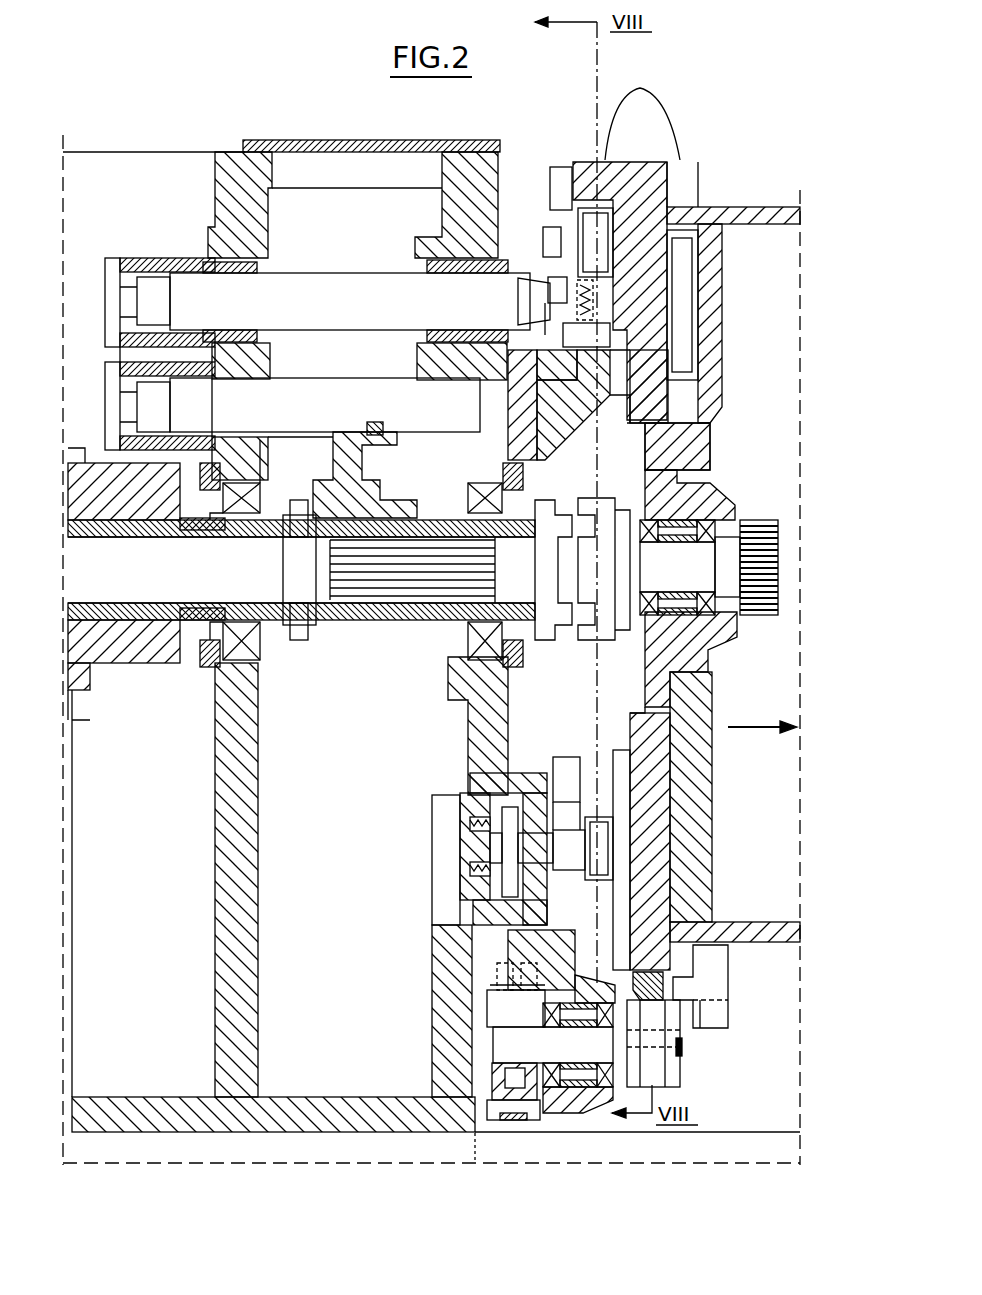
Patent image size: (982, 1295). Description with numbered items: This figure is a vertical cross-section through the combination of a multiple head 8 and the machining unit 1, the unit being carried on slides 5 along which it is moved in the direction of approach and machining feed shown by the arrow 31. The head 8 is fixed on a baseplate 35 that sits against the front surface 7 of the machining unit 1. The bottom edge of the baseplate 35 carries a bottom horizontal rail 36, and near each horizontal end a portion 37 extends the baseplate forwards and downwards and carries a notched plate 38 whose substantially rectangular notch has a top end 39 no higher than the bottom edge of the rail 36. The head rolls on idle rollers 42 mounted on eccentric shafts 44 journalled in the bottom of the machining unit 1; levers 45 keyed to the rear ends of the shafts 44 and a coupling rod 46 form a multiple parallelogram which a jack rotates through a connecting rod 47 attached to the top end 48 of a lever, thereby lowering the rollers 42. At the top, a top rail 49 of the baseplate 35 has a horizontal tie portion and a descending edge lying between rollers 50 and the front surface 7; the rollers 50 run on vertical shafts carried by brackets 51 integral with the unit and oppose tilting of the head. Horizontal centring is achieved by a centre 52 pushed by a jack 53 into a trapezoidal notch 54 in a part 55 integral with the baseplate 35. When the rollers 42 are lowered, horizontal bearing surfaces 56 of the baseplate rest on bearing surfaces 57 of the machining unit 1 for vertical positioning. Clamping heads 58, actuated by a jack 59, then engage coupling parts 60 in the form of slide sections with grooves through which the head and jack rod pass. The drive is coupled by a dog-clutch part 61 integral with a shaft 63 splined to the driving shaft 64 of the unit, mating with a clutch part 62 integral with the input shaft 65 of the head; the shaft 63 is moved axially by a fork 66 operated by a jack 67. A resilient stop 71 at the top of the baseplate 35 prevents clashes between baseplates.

The machining unit 1 is at (470, 185).
The slides 5 is at (766, 1142).
The front surface 7 is at (510, 718).
The head 8 is at (760, 212).
The arrow 31 is at (762, 715).
The baseplate 35 is at (655, 848).
The bottom horizontal rail 36 is at (652, 980).
The portion 37 is at (712, 977).
The notched plate 38 is at (710, 1020).
The top end 39 is at (715, 1003).
The rollers 42 is at (656, 1066).
The shafts 44 is at (578, 1050).
The levers 45 is at (500, 1082).
The coupling rod 46 is at (512, 1122).
The connecting rod 47 is at (505, 975).
The top end 48 is at (495, 1010).
The top rail 49 is at (555, 330).
The rollers 50 is at (576, 342).
The brackets 51 is at (592, 358).
The centre 52 is at (530, 298).
The jack 53 is at (88, 300).
The notch 54 is at (565, 287).
The part 55 is at (662, 302).
The horizontal bearing surfaces 56 is at (620, 298).
The bearing surfaces 57 is at (598, 324).
The clamping heads 58 is at (592, 235).
The jack 59 is at (510, 848).
The coupling parts 60 is at (630, 898).
The dog-clutch part 61 is at (548, 612).
The clutch part 62 is at (604, 612).
The shaft 63 is at (415, 567).
The driving shaft 64 is at (177, 612).
The input shaft 65 is at (678, 570).
The fork 66 is at (370, 468).
The jack 67 is at (88, 400).
The resilient stops 71 is at (650, 127).